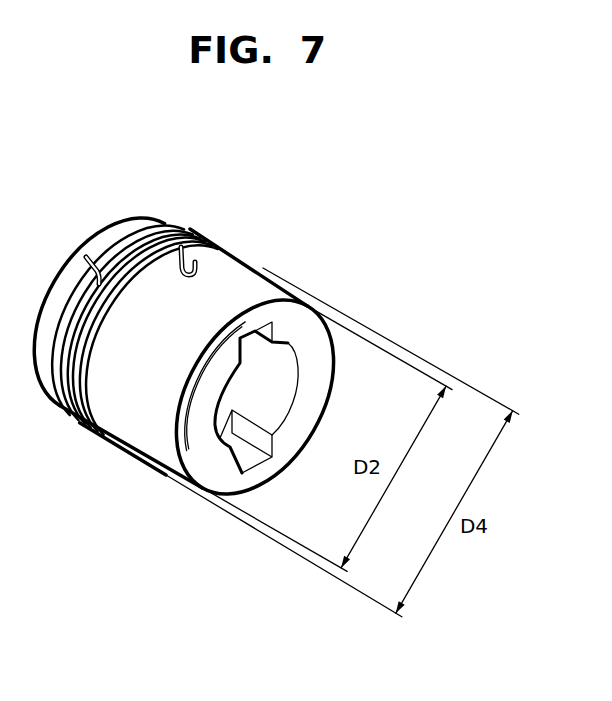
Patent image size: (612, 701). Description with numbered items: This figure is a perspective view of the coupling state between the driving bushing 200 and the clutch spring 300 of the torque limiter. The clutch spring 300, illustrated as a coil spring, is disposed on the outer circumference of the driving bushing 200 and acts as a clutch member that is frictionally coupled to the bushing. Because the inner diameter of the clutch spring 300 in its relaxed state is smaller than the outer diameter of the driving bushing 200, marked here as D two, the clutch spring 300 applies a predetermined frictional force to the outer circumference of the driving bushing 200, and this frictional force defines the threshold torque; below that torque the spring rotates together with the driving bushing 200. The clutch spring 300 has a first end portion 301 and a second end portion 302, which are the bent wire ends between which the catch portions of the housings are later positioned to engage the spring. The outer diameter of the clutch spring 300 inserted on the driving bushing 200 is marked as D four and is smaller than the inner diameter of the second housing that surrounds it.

The driving bushing 200 is at (167, 447).
The clutch spring 300 is at (212, 232).
The first end portion 301 is at (97, 258).
The second end portion 302 is at (205, 243).